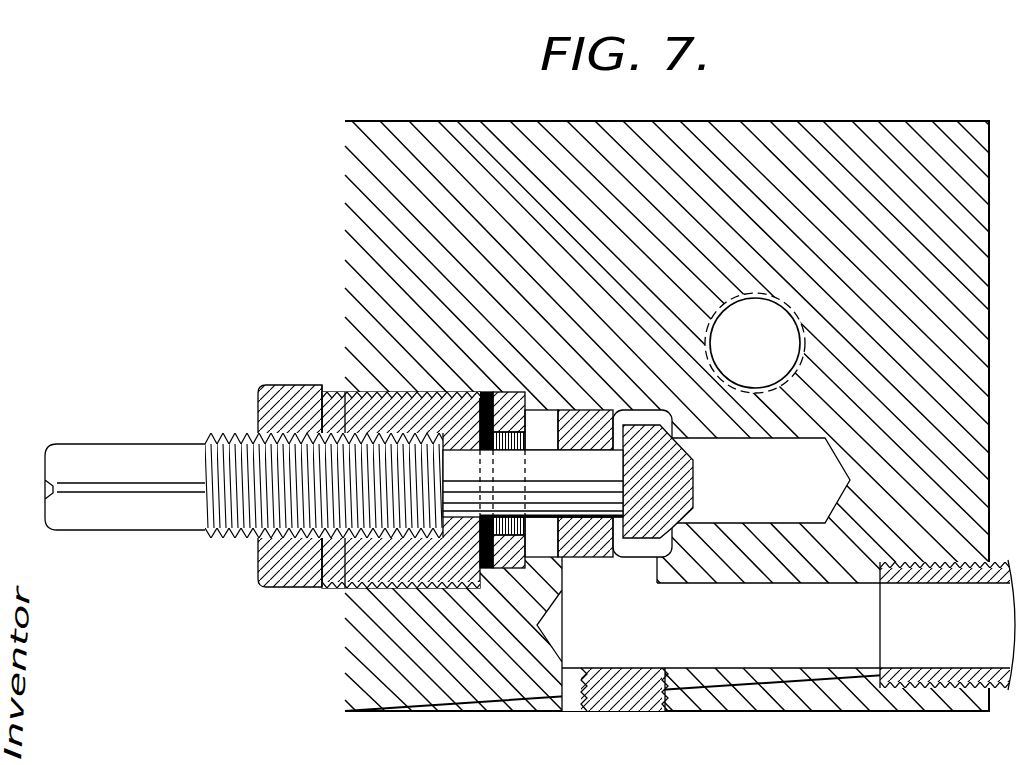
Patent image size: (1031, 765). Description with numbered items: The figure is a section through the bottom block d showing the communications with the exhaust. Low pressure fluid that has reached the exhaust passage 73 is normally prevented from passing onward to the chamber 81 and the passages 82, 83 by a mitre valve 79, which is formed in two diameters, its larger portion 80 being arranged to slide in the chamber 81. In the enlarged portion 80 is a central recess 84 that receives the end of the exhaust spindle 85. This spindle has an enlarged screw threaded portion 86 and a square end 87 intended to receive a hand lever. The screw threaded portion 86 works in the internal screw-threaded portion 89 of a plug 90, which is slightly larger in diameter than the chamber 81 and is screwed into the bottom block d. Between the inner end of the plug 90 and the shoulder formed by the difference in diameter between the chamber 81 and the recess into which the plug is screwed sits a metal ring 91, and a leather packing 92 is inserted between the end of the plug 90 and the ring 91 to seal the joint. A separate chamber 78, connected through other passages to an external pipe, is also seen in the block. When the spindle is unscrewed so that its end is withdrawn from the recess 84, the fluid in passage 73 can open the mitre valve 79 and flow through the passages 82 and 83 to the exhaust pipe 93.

The bottom block d is at (876, 118).
The exhaust passage 73 is at (761, 480).
The chamber 78 is at (755, 343).
The mitre valve 79 is at (643, 447).
The larger portion 80 is at (598, 412).
The chamber 81 is at (551, 372).
The passage 82 is at (588, 567).
The passage 83 is at (708, 634).
The central recess 84 is at (541, 430).
The exhaust spindle 85 is at (533, 483).
The enlarged screw threaded portion 86 is at (395, 503).
The square end 87 is at (142, 510).
The internal screw-threaded portion 89 is at (297, 392).
The plug 90 is at (327, 427).
The metal ring 91 is at (508, 395).
The leather packing 92 is at (481, 393).
The exhaust pipe 93 is at (947, 595).